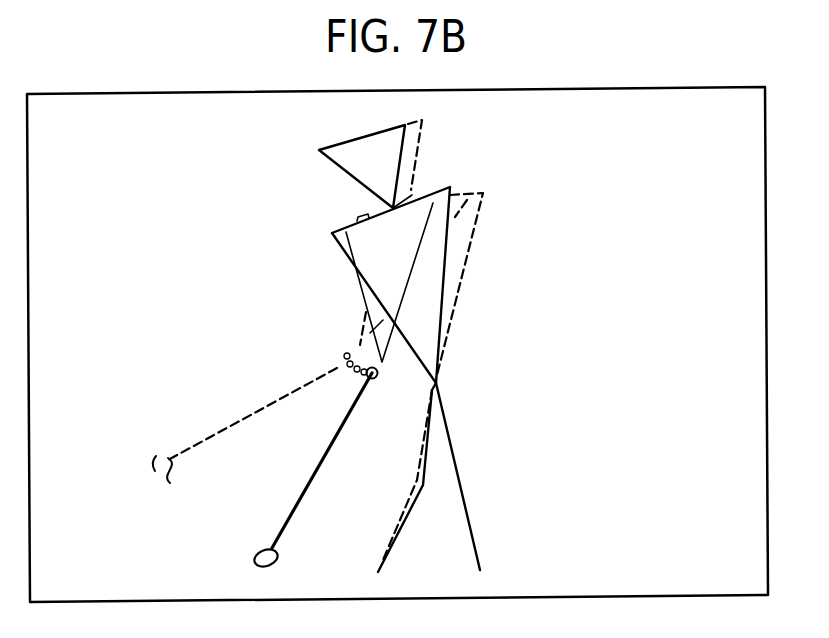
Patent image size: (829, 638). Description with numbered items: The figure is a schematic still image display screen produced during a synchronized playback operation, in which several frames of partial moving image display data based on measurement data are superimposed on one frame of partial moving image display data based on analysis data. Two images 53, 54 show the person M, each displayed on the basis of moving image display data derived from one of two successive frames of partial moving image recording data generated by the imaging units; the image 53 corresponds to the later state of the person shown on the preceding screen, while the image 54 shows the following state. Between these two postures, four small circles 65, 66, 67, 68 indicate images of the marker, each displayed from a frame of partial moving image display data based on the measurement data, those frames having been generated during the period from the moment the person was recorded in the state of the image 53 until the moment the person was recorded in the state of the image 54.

The image 53 is at (465, 268).
The image 54 is at (450, 445).
The small circle 65 is at (344, 355).
The small circle 66 is at (347, 364).
The small circle 67 is at (354, 369).
The small circle 68 is at (361, 373).